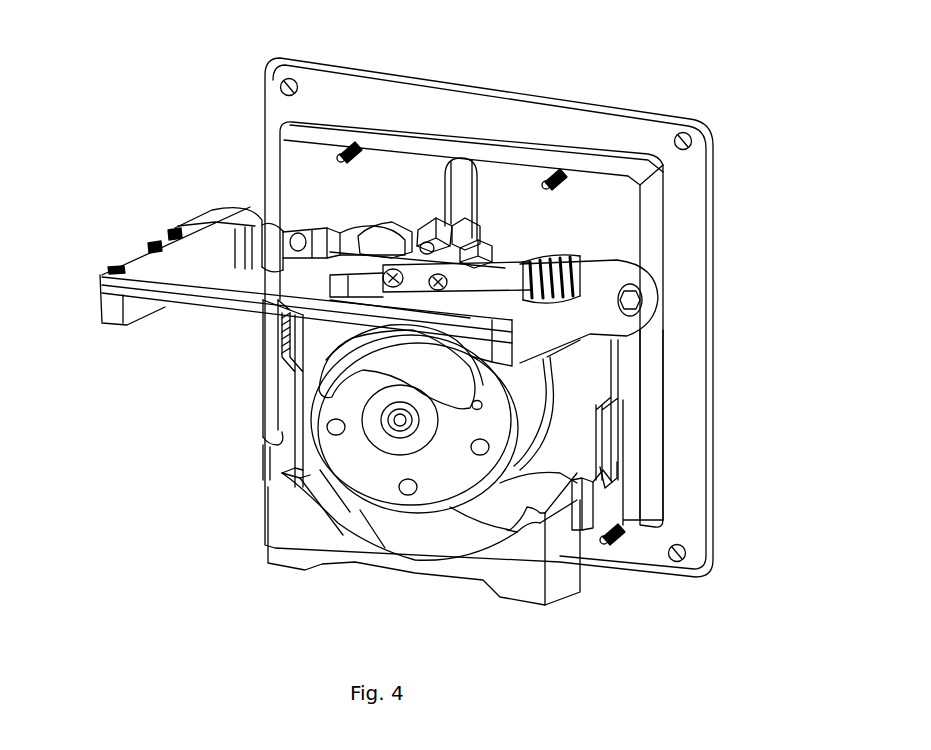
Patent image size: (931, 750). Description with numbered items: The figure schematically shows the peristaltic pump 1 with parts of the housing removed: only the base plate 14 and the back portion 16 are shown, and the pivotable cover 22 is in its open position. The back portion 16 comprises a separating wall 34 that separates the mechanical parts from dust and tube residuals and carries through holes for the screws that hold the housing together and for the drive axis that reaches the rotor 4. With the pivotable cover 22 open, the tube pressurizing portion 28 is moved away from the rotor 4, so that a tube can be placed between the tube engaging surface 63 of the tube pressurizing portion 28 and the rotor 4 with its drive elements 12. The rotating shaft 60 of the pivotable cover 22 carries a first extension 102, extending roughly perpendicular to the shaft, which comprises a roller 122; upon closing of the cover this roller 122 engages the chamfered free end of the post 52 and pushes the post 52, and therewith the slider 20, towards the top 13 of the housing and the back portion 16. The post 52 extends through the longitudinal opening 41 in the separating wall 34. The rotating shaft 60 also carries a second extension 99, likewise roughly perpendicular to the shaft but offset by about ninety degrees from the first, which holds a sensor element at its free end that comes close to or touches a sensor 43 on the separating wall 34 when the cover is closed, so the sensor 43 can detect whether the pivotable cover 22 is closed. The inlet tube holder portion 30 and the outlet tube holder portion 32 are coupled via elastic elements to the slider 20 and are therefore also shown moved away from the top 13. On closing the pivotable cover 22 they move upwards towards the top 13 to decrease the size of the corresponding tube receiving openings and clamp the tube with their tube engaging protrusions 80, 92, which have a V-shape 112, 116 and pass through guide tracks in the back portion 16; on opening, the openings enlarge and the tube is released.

The peristaltic pump 1 is at (666, 81).
The rotor 4 is at (327, 403).
The drive elements 12 is at (520, 427).
The top 13 is at (367, 128).
The base plate 14 is at (485, 112).
The back portion 16 is at (580, 215).
The separating wall 34 is at (621, 282).
The slider 20 is at (462, 195).
The pivotable cover 22 is at (193, 270).
The tube pressurizing portion 28 is at (327, 535).
The inlet tube holder portion 30 is at (605, 482).
The outlet tube holder portion 32 is at (307, 450).
The longitudinal opening 41 is at (448, 218).
The sensor 43 is at (330, 233).
The post 52 is at (446, 222).
The rotating shaft 60 is at (312, 258).
The tube engaging surface 63 is at (412, 540).
The tube engaging protrusion 80 is at (592, 507).
The tube engaging protrusion 92 is at (280, 445).
The second extension 99 is at (352, 287).
The first extension 102 is at (473, 258).
The V-shape 112 is at (594, 482).
The V-shape 116 is at (280, 440).
The roller 122 is at (468, 250).